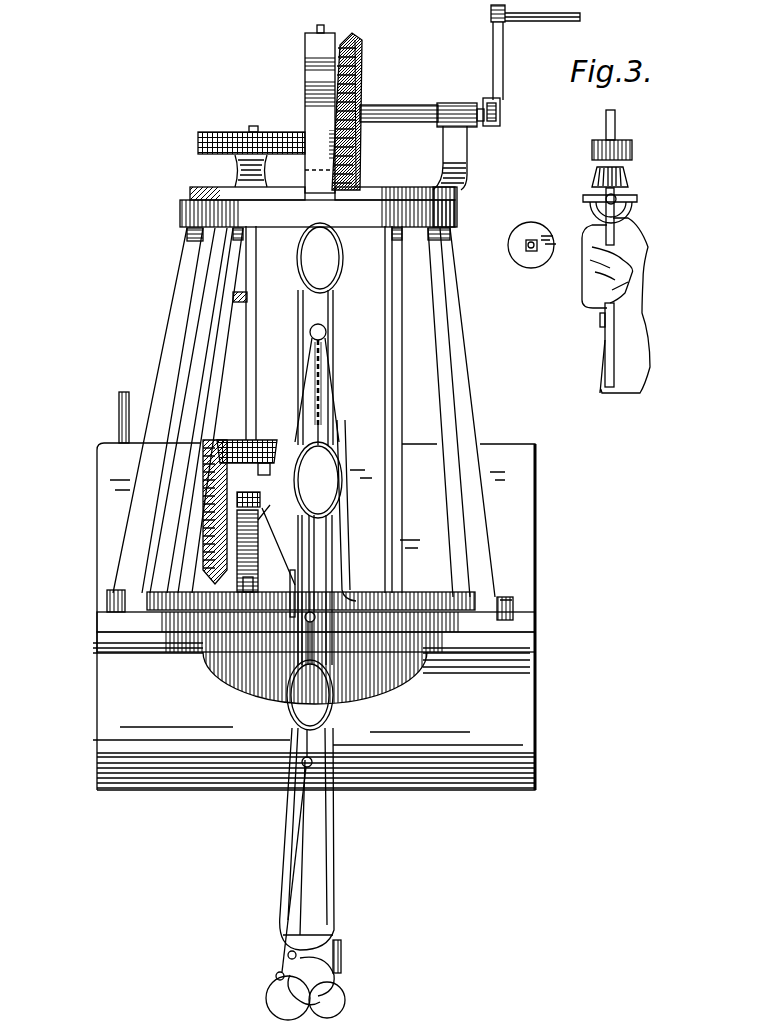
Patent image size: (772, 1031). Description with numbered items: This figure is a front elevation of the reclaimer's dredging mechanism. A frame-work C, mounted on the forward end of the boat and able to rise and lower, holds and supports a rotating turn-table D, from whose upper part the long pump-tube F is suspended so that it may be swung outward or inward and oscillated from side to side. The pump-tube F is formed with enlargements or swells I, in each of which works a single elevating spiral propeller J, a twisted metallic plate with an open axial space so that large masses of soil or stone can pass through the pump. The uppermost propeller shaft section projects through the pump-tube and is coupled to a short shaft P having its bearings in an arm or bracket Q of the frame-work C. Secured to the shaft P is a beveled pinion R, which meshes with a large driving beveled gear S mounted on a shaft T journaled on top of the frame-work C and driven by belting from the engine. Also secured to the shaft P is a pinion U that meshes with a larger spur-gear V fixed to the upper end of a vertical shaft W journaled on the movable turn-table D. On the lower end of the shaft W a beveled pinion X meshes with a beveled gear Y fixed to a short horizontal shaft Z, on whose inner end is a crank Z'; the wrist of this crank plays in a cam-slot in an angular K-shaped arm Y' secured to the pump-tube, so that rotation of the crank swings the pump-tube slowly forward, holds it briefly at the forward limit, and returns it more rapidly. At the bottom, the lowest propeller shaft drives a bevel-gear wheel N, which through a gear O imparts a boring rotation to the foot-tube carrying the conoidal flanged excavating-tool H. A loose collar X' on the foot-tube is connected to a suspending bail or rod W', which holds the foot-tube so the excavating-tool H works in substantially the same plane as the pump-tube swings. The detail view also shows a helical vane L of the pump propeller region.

The short shaft P is at (324, 27).
The arm or bracket Q is at (305, 50).
The driving beveled gear S is at (362, 62).
The shaft T is at (405, 104).
The spur-gear V is at (230, 132).
The pinion U is at (340, 135).
The beveled pinion R is at (640, 175).
The frame-work C is at (321, 290).
The turn-table D is at (386, 424).
The vertical shaft W is at (300, 477).
The swells I is at (315, 476).
The beveled pinion X is at (249, 442).
The beveled gear Y is at (127, 512).
The K-shaped arm Y' is at (188, 648).
The short horizontal shaft Z is at (308, 659).
The crank Z' is at (276, 545).
The pump-tube F is at (317, 567).
The suspending bail or rod W' is at (322, 839).
The gear O is at (288, 954).
The bevel-gear wheel N is at (342, 957).
The excavating-tool H is at (345, 998).
The loose collar X' is at (252, 980).
The spiral propeller J is at (555, 244).
The paddle L is at (618, 311).